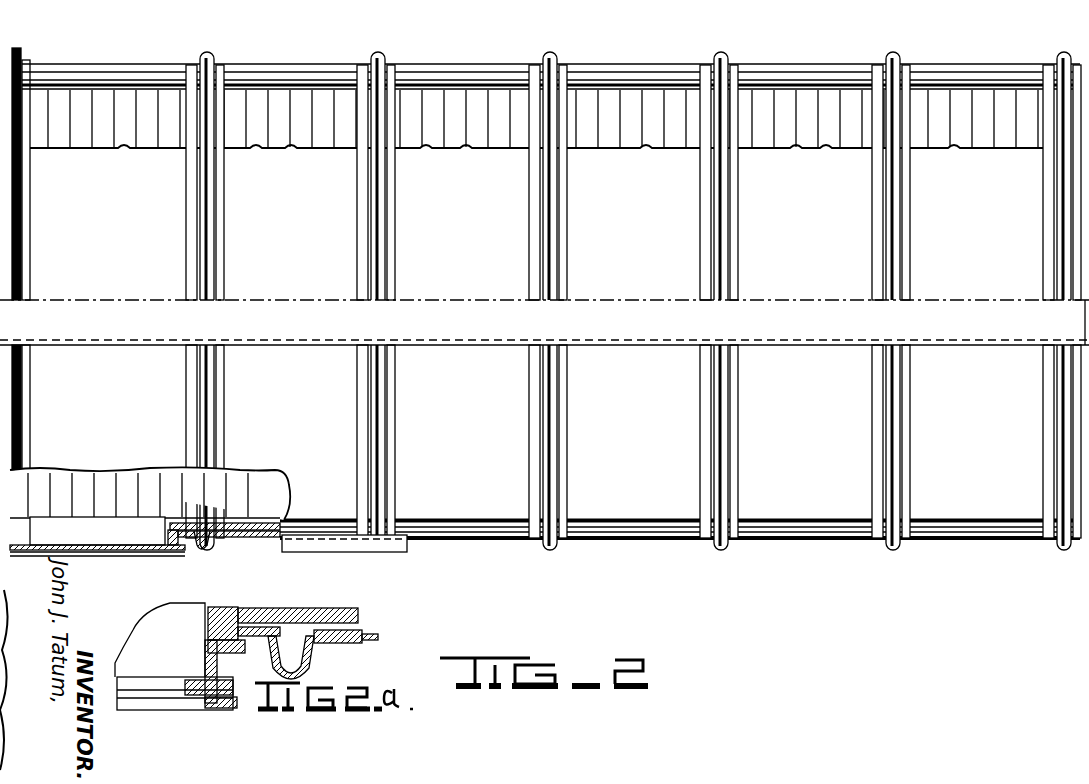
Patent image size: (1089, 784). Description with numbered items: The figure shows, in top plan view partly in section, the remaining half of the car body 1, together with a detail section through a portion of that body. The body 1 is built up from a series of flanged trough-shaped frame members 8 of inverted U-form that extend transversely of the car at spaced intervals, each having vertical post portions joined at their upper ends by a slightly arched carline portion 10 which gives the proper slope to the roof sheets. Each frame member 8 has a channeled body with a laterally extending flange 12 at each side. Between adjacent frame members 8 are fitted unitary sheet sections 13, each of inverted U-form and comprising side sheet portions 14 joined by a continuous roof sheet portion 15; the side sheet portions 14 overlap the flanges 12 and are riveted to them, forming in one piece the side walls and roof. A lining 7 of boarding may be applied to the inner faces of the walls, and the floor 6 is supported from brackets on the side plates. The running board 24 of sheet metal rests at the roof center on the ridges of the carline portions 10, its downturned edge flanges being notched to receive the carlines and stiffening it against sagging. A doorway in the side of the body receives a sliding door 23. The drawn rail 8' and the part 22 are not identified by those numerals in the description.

In FIG. 2, the body 1 is at (290, 77).
In FIG. 2, the floor 6 is at (790, 102).
In FIG. 2, the lining 7 is at (258, 530).
In FIG. 2a, the lining 7 is at (300, 608).
In FIG. 2, the frame member 8 is at (563, 403).
In FIG. 2a, the frame member 8 is at (305, 657).
In FIG. 2, the top rail 8' is at (551, 59).
In FIG. 2, the carline portion 10 is at (546, 314).
In FIG. 2, the flange 12 is at (222, 252).
In FIG. 2a, the flange 12 is at (330, 608).
In FIG. 2, the sheet section 13 is at (818, 513).
In FIG. 2, the side sheet portion 14 is at (466, 543).
In FIG. 2a, the side sheet portion 14 is at (378, 637).
In FIG. 2, the roof sheet portion 15 is at (328, 356).
In FIG. 2, the angle bracket 22 is at (182, 546).
In FIG. 2a, the angle bracket 22 is at (228, 614).
In FIG. 2, the sliding door 23 is at (128, 551).
In FIG. 2a, the sliding door 23 is at (160, 690).
In FIG. 2, the running board 24 is at (505, 338).